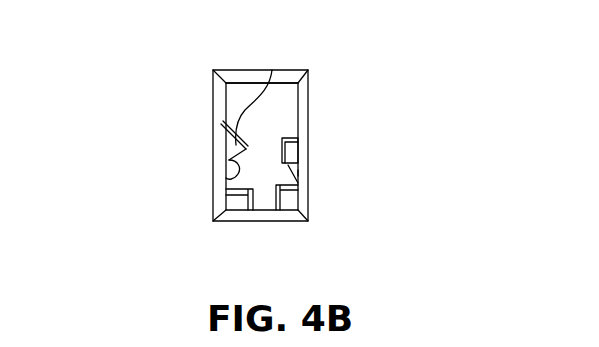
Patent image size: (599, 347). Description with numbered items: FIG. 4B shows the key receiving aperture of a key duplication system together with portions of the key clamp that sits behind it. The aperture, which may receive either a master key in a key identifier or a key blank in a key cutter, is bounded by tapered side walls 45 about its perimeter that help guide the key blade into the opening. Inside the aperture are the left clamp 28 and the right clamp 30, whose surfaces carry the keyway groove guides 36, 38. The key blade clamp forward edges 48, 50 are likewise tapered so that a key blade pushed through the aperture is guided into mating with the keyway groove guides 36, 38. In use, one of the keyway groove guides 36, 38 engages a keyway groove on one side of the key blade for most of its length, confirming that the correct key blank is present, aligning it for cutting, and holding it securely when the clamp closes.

The left clamp 28 is at (242, 200).
The right clamp 30 is at (290, 202).
The keyway groove guide 36 is at (290, 150).
The keyway groove guide 38 is at (227, 148).
The tapered side walls 45 is at (221, 124).
The key blade clamp forward edge 48 is at (226, 178).
The key blade clamp forward edge 50 is at (272, 70).